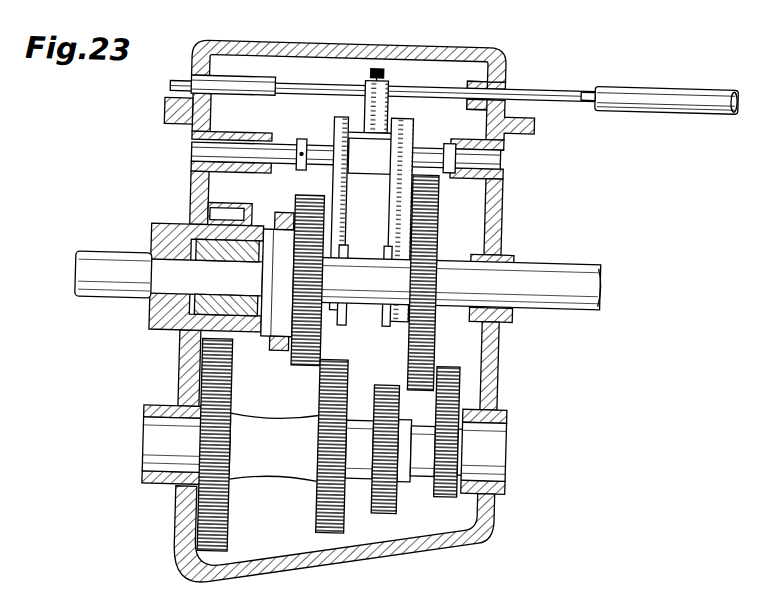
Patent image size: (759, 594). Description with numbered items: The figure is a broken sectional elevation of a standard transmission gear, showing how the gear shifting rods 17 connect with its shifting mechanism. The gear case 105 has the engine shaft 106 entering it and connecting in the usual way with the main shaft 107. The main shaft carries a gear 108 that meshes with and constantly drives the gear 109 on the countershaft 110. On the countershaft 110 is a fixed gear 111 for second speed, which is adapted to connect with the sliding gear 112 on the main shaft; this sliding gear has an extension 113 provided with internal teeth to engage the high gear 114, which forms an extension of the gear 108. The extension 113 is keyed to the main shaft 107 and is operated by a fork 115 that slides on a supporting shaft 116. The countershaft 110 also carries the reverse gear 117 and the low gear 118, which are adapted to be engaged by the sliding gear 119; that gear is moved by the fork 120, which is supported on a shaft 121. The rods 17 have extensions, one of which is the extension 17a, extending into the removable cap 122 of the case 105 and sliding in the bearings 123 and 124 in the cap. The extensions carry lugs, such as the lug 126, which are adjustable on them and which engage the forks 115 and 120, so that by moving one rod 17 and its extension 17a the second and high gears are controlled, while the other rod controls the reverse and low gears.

The gear shifting rod 17 is at (688, 98).
The rod extension 17a is at (547, 86).
The gear case 105 is at (495, 188).
The engine shaft 106 is at (102, 298).
The main shaft 107 is at (587, 278).
The gear 108 is at (215, 212).
The gear 109 is at (224, 518).
The countershaft 110 is at (502, 442).
The fixed gear 111 is at (340, 364).
The sliding gear 112 is at (305, 359).
The extension 113 is at (260, 224).
The high gear 114 is at (248, 226).
The fork 115 is at (337, 185).
The supporting shaft 116 is at (308, 147).
The reverse gear 117 is at (448, 495).
The low gear 118 is at (395, 503).
The sliding gear 119 is at (426, 193).
The fork 120 is at (396, 207).
The shaft 121 is at (428, 153).
The removable cap 122 is at (373, 47).
The bearing 123 is at (472, 73).
The bearing 124 is at (246, 77).
The lug 126 is at (383, 84).